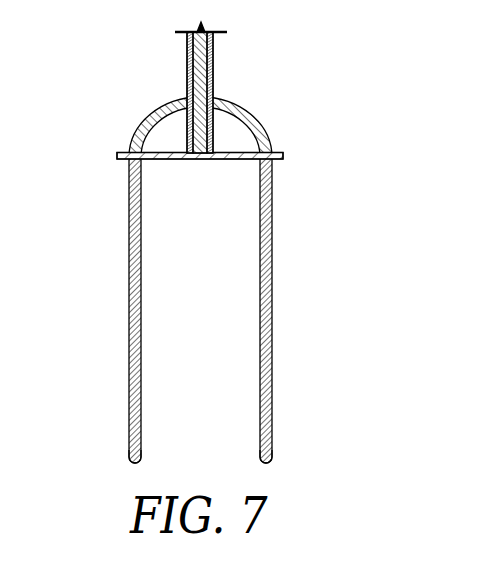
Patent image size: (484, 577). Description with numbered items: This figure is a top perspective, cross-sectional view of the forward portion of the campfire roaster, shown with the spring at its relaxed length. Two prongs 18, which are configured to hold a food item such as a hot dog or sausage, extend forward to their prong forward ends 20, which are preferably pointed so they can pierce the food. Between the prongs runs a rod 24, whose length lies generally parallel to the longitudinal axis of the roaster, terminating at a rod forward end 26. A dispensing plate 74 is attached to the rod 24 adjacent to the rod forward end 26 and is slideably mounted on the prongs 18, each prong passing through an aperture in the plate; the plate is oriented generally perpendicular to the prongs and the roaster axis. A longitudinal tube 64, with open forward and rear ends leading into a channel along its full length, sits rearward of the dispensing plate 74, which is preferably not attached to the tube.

The prong 18 is at (129, 315).
The prong forward end 20 is at (129, 460).
The rod 24 is at (210, 123).
The rod forward end 26 is at (208, 143).
The longitudinal tube 64 is at (214, 42).
The dispensing plate 74 is at (168, 159).